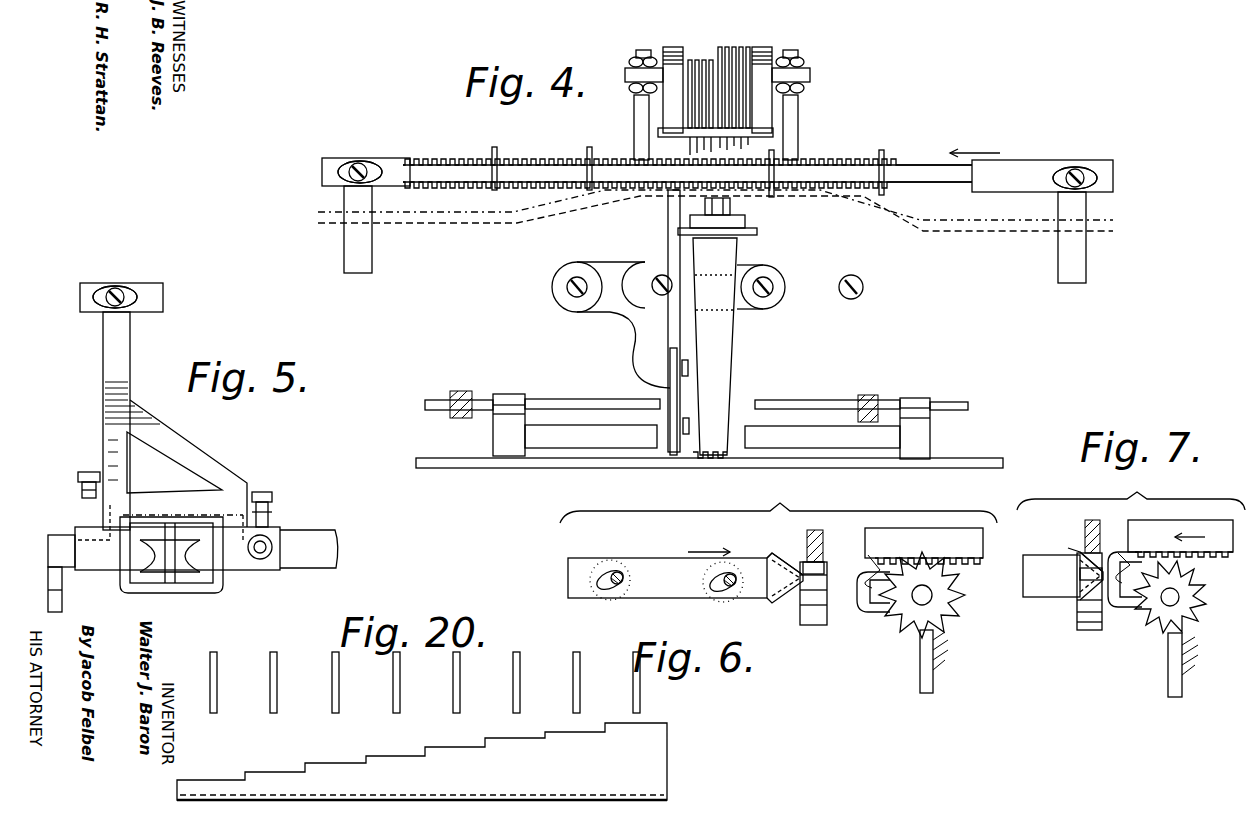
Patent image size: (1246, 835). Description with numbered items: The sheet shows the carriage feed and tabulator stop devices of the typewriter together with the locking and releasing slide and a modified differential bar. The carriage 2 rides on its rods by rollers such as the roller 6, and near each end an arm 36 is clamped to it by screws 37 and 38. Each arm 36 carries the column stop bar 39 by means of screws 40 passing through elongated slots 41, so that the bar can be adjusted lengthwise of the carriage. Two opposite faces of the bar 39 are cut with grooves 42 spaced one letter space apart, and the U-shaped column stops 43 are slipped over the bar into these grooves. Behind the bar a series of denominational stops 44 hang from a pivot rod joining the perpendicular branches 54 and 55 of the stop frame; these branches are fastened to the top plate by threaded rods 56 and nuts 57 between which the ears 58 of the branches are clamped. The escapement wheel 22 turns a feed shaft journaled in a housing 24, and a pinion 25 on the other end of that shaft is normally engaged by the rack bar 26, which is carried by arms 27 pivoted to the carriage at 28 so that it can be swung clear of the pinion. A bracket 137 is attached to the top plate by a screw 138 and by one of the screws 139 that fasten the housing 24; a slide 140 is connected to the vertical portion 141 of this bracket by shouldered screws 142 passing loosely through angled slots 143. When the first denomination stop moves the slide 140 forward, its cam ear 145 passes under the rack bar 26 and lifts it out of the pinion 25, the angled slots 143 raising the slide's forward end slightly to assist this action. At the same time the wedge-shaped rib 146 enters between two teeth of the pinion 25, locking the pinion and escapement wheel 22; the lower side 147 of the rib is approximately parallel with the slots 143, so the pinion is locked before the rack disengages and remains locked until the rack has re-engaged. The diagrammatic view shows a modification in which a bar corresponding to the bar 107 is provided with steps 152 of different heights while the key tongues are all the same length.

In FIG. 5, the carriage 2 is at (305, 568).
In FIG. 5, the roller 6 is at (196, 572).
In FIG. 4, the escapement wheel 22 is at (757, 231).
In FIG. 6, the escapement wheel 22 is at (948, 633).
In FIG. 7, the escapement wheel 22 is at (1210, 604).
In FIG. 4, the housing 24 is at (733, 325).
In FIG. 4, the pinion 25 is at (730, 455).
In FIG. 6, the pinion 25 is at (827, 615).
In FIG. 7, the pinion 25 is at (1086, 630).
In FIG. 4, the rack bar 26 is at (593, 468).
In FIG. 6, the rack bar 26 is at (937, 527).
In FIG. 7, the rack bar 26 is at (1094, 532).
In FIG. 4, the arms 27 is at (495, 433).
In FIG. 4, the pivots 28 is at (940, 402).
In FIG. 4, the arm 36 is at (1060, 244).
In FIG. 5, the arm 36 is at (103, 407).
In FIG. 5, the screw 37 is at (86, 472).
In FIG. 5, the screw 38 is at (266, 496).
In FIG. 4, the column stop bar 39 is at (717, 175).
In FIG. 5, the column stop bar 39 is at (160, 298).
In FIG. 4, the screws 40 is at (1077, 172).
In FIG. 5, the screws 40 is at (115, 288).
In FIG. 4, the elongated slots 41 is at (345, 176).
In FIG. 5, the elongated slots 41 is at (128, 293).
In FIG. 4, the grooves 42 is at (414, 158).
In FIG. 4, the column stops 43 is at (496, 158).
In FIG. 4, the denominational stops 44 is at (695, 62).
In FIG. 4, the perpendicular branch 54 is at (764, 50).
In FIG. 4, the perpendicular branch 55 is at (675, 46).
In FIG. 4, the rods 56 is at (634, 117).
In FIG. 4, the nuts 57 is at (642, 57).
In FIG. 4, the ears 58 is at (627, 68).
In FIG. 20, the bar 107 is at (440, 798).
In FIG. 4, the bracket 137 is at (632, 320).
In FIG. 4, the screw 138 is at (588, 284).
In FIG. 4, the screw 139 is at (668, 282).
In FIG. 4, the slide 140 is at (680, 328).
In FIG. 6, the slide 140 is at (685, 578).
In FIG. 7, the slide 140 is at (1023, 575).
In FIG. 4, the vertical portion 141 is at (668, 368).
In FIG. 4, the shouldered screws 142 is at (688, 368).
In FIG. 6, the shouldered screws 142 is at (622, 576).
In FIG. 6, the slots 143 is at (603, 590).
In FIG. 6, the cam ear 145 is at (786, 556).
In FIG. 7, the cam ear 145 is at (1072, 550).
In FIG. 6, the rib 146 is at (882, 612).
In FIG. 7, the rib 146 is at (1130, 607).
In FIG. 6, the lower side 147 is at (788, 600).
In FIG. 7, the lower side 147 is at (1070, 604).
In FIG. 20, the steps 152 is at (235, 779).